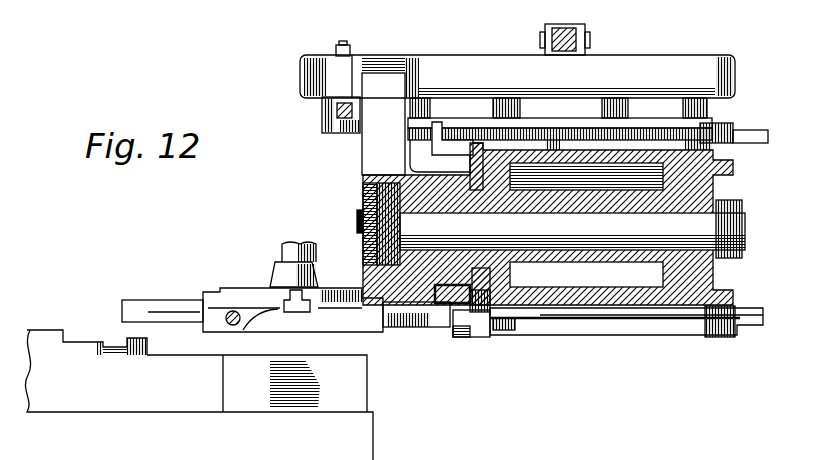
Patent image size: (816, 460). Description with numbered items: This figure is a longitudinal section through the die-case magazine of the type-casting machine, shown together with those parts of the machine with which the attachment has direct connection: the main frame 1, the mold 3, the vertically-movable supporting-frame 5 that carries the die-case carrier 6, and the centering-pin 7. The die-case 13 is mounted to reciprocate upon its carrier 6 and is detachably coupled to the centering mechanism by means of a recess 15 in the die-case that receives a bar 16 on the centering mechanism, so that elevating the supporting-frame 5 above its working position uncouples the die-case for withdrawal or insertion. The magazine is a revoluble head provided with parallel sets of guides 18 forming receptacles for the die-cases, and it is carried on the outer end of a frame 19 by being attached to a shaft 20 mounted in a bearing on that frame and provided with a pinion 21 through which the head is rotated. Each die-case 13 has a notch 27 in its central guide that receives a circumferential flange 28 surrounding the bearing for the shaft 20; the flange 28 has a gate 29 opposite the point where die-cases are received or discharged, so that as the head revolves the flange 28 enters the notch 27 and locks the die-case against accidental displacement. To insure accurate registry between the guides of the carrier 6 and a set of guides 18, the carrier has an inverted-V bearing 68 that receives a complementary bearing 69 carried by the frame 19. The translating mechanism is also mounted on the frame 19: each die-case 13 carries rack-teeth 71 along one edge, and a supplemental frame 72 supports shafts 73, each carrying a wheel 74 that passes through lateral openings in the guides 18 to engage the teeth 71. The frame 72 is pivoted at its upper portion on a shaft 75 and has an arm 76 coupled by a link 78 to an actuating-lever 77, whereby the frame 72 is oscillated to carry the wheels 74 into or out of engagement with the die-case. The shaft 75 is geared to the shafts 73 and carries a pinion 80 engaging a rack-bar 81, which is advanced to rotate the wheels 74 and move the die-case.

The main frame 1 is at (199, 395).
The mold 3 is at (257, 383).
The supporting-frame 5 is at (262, 290).
The die-case carrier 6 is at (205, 303).
The centering-pin 7 is at (297, 232).
The die-case 13 is at (626, 334).
The recess 15 is at (450, 126).
The bar 16 is at (147, 339).
The guides 18 is at (727, 336).
The frame 19 is at (388, 224).
The shaft 20 is at (572, 225).
The pinion 21 is at (349, 213).
The notch 27 is at (362, 211).
The flange 28 is at (504, 294).
The gate 29 is at (483, 331).
The inverted-V bearing 68 is at (427, 304).
The complementary bearing 69 is at (403, 302).
The rack-teeth 71 is at (664, 128).
The supplemental frame 72 is at (722, 76).
The shafts 73 is at (647, 126).
The wheel 74 is at (433, 324).
The shaft 75 is at (481, 336).
The arm 76 is at (572, 19).
The actuating-lever 77 is at (713, 177).
The link 78 is at (712, 131).
The pinion 80 is at (350, 51).
The rack-bar 81 is at (325, 110).